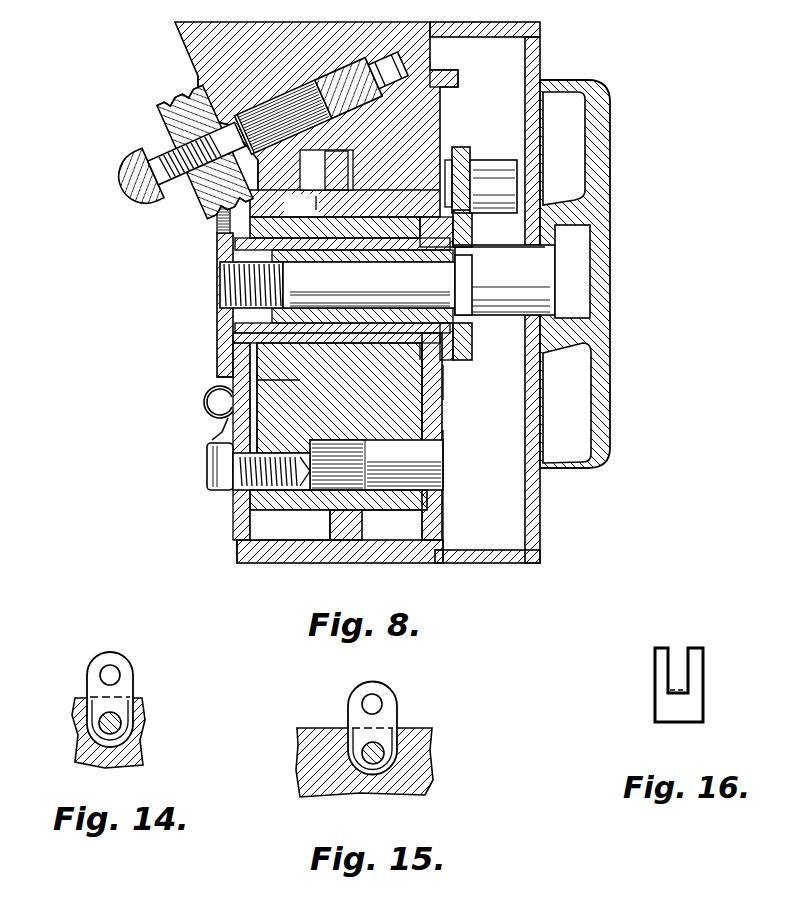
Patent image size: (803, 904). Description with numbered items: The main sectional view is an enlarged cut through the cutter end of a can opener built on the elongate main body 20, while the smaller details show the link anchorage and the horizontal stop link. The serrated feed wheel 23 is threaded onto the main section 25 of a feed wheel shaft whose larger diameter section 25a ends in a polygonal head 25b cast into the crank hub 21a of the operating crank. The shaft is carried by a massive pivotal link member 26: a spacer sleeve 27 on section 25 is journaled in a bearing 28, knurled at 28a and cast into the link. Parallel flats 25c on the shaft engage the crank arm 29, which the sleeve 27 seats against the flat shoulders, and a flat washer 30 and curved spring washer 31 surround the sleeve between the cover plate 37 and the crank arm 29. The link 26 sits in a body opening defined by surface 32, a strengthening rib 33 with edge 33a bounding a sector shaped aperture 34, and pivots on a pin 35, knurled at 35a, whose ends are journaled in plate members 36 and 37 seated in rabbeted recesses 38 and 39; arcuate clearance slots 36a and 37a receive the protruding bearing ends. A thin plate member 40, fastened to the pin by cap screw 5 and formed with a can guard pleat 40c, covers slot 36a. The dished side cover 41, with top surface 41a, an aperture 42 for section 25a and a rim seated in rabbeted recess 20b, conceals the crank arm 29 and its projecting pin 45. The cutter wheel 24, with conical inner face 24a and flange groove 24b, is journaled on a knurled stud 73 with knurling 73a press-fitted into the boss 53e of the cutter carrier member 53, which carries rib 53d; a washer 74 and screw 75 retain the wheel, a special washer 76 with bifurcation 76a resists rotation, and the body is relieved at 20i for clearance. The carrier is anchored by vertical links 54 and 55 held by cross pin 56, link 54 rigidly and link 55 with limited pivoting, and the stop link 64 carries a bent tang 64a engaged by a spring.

In FIG. 8, the cap screw 5 is at (208, 468).
In FIG. 8, the main body 20 is at (338, 566).
In FIG. 14, the main body 20 is at (143, 743).
In FIG. 15, the main body 20 is at (413, 783).
In FIG. 8, the rabbeted recess 20b is at (442, 558).
In FIG. 8, the relief 20i is at (302, 205).
In FIG. 8, the crank hub 21a is at (600, 96).
In FIG. 8, the feed wheel 23 is at (217, 334).
In FIG. 8, the cutter wheel 24 is at (152, 92).
In FIG. 8, the conical inner face 24a is at (175, 97).
In FIG. 8, the groove 24b is at (182, 106).
In FIG. 8, the main section of feed wheel shaft 25 is at (372, 339).
In FIG. 8, the larger diameter section of feed wheel shaft 25a is at (485, 325).
In FIG. 8, the polygonal head 25b is at (580, 299).
In FIG. 8, the parallel flats 25c is at (470, 279).
In FIG. 8, the pivotal link member 26 is at (410, 386).
In FIG. 8, the spacer sleeve 27 is at (325, 333).
In FIG. 8, the bearing 28 is at (310, 334).
In FIG. 8, the knurling 28a is at (302, 373).
In FIG. 8, the crank arm 29 is at (470, 232).
In FIG. 8, the flat washer 30 is at (452, 368).
In FIG. 8, the curved spring washer 31 is at (475, 338).
In FIG. 8, the body opening surface 32 is at (284, 546).
In FIG. 8, the strengthening rib 33 is at (370, 562).
In FIG. 8, the rib edge 33a is at (327, 515).
In FIG. 8, the sector shaped aperture 34 is at (360, 513).
In FIG. 8, the pivot pin 35 is at (430, 462).
In FIG. 8, the knurling 35a is at (346, 422).
In FIG. 8, the plate member 36 is at (250, 409).
In FIG. 8, the arcuate clearance slot 36a is at (217, 358).
In FIG. 8, the cover plate 37 is at (443, 420).
In FIG. 8, the arcuate clearance slot 37a is at (420, 360).
In FIG. 8, the rabbeted recess 38 is at (238, 542).
In FIG. 8, the rabbeted recess 39 is at (445, 528).
In FIG. 8, the thin plate member 40 is at (212, 434).
In FIG. 8, the pleat 40c is at (206, 406).
In FIG. 8, the side cover 41 is at (541, 69).
In FIG. 8, the top surface of side cover 41a is at (507, 28).
In FIG. 8, the aperture 42 is at (530, 249).
In FIG. 8, the pin 45 is at (494, 170).
In FIG. 8, the cutter carrier member 53 is at (302, 31).
In FIG. 8, the strengthening rib 53d is at (460, 78).
In FIG. 8, the boss 53e is at (220, 61).
In FIG. 14, the vertical link 54 is at (135, 682).
In FIG. 15, the vertical link 55 is at (397, 708).
In FIG. 14, the cross pin 56 is at (111, 734).
In FIG. 15, the cross pin 56 is at (373, 764).
In FIG. 16, the stop link 64 is at (657, 707).
In FIG. 16, the tang 64a is at (680, 684).
In FIG. 8, the stud 73 is at (322, 82).
In FIG. 8, the knurling 73a is at (290, 99).
In FIG. 8, the washer 74 is at (150, 134).
In FIG. 8, the screw 75 is at (143, 180).
In FIG. 8, the special washer 76 is at (253, 174).
In FIG. 8, the bifurcation 76a is at (201, 79).